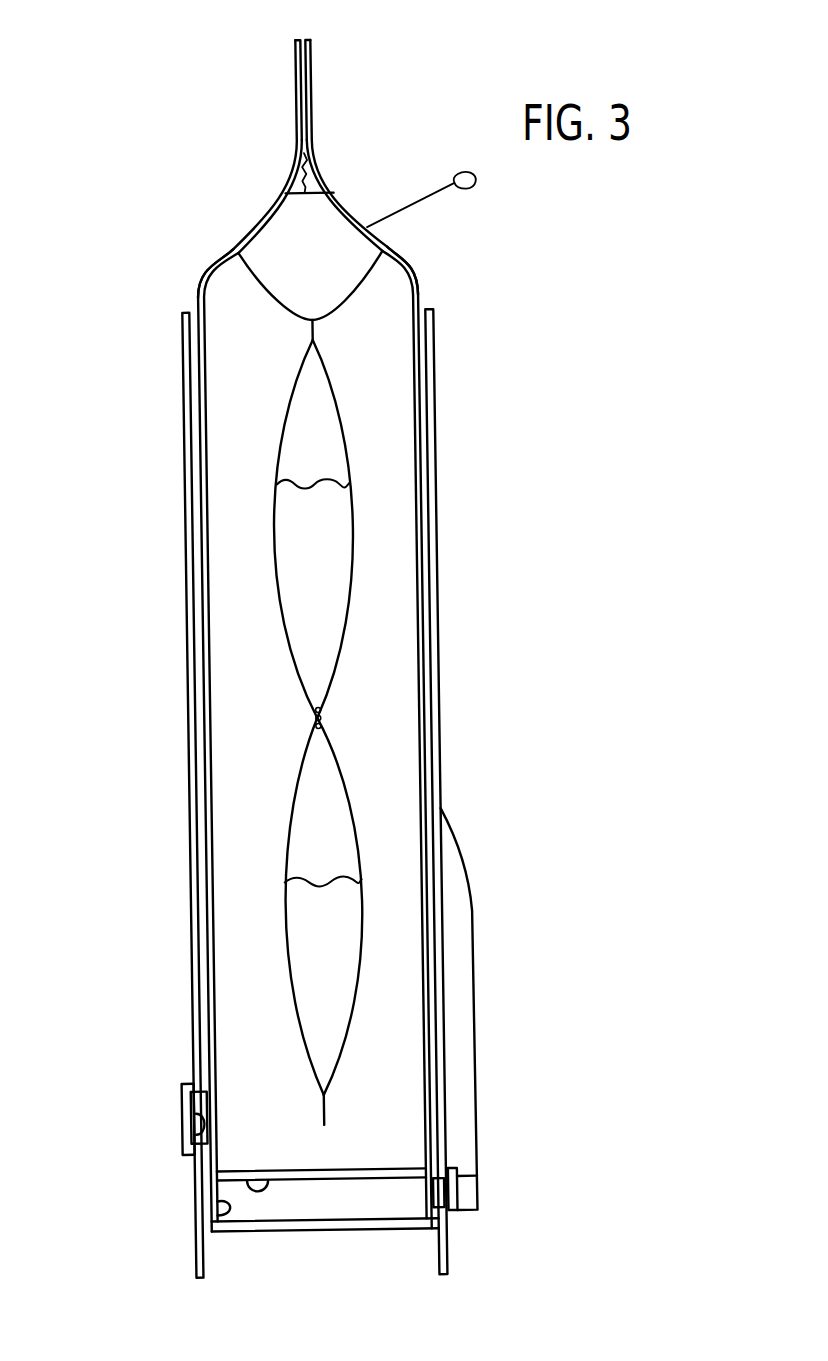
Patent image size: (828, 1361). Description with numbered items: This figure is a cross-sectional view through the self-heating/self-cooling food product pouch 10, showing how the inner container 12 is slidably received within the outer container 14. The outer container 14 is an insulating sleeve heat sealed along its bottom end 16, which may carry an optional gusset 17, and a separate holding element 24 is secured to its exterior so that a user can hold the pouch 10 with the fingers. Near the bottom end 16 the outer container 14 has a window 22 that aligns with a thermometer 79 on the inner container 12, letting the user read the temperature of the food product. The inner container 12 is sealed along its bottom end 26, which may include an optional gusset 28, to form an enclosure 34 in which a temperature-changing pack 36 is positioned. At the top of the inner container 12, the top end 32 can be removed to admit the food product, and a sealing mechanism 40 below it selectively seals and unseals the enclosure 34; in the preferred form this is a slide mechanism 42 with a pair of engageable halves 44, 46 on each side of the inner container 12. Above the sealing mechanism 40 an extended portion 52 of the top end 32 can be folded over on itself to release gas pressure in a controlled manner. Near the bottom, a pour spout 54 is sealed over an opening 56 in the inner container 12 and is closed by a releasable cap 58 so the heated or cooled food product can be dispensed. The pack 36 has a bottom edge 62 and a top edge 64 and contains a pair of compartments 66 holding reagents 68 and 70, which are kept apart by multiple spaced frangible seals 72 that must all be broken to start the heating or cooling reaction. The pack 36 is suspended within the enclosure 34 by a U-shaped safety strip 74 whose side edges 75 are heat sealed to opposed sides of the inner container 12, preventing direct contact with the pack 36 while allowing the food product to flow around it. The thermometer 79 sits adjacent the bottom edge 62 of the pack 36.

The self-heating/self-cooling food product pouch 10 is at (572, 637).
The inner container 12 is at (166, 259).
The outer container 14 is at (121, 494).
The bottom end 16 is at (440, 1245).
The gusset 17 is at (315, 1252).
The window 22 is at (450, 1178).
The holding element 24 is at (457, 880).
The bottom end 26 is at (223, 1210).
The gusset 28 is at (261, 1181).
The top end 32 is at (317, 37).
The enclosure 34 is at (369, 626).
The temperature-changing pack 36 is at (340, 718).
The sealing mechanism 40 is at (354, 154).
The slide mechanism 42 is at (291, 156).
The engageable half 44 is at (293, 192).
The engageable half 46 is at (322, 183).
The extended portion 52 is at (321, 137).
The pour spout 54 is at (186, 1137).
The opening 56 is at (196, 1102).
The cap 58 is at (176, 1093).
The bottom edge 62 is at (318, 1115).
The top edge 64 is at (319, 330).
The compartments 66 is at (339, 508).
The reagent 68 is at (289, 938).
The reagent 70 is at (286, 500).
The frangible seals 72 is at (316, 726).
The safety strip 74 is at (335, 302).
The side edges 75 is at (240, 247).
The thermometer 79 is at (427, 1206).